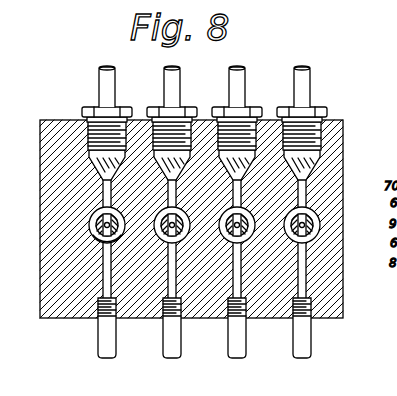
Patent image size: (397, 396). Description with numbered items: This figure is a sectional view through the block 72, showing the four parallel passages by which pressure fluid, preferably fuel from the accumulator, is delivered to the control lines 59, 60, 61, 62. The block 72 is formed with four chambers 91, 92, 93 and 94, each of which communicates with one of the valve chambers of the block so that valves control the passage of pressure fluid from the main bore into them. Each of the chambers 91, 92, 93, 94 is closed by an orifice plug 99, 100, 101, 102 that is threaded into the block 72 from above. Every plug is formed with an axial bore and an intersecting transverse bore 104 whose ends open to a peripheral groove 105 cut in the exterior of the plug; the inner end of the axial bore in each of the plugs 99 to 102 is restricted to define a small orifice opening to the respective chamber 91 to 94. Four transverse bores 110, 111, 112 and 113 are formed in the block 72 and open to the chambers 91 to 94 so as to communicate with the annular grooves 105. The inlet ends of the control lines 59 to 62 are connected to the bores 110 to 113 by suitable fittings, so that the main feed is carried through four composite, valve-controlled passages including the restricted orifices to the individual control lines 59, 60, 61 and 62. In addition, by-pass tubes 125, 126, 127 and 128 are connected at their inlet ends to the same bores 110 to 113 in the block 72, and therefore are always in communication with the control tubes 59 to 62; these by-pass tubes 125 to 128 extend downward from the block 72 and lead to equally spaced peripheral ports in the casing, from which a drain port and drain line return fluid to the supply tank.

The control line 59 is at (310, 84).
The control line 60 is at (245, 84).
The control line 61 is at (180, 84).
The control line 62 is at (115, 84).
The block 72 is at (342, 302).
The chamber 91 is at (322, 223).
The chamber 92 is at (248, 239).
The chamber 93 is at (183, 239).
The chamber 94 is at (95, 227).
The orifice plug 99 is at (322, 202).
The orifice plug 100 is at (225, 213).
The orifice plug 101 is at (160, 212).
The orifice plug 102 is at (92, 213).
The transverse bore 104 is at (100, 243).
The peripheral groove 105 is at (94, 233).
The transverse bore 110 is at (307, 284).
The transverse bore 111 is at (243, 285).
The transverse bore 112 is at (182, 290).
The transverse bore 113 is at (102, 287).
The by-pass tube 125 is at (312, 338).
The by-pass tube 126 is at (247, 352).
The by-pass tube 127 is at (181, 351).
The by-pass tube 128 is at (116, 352).